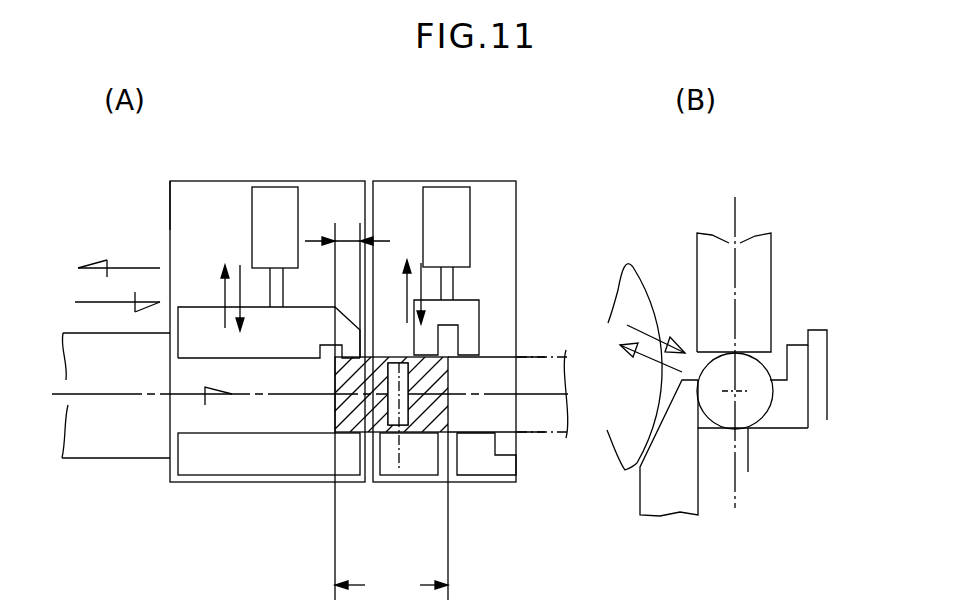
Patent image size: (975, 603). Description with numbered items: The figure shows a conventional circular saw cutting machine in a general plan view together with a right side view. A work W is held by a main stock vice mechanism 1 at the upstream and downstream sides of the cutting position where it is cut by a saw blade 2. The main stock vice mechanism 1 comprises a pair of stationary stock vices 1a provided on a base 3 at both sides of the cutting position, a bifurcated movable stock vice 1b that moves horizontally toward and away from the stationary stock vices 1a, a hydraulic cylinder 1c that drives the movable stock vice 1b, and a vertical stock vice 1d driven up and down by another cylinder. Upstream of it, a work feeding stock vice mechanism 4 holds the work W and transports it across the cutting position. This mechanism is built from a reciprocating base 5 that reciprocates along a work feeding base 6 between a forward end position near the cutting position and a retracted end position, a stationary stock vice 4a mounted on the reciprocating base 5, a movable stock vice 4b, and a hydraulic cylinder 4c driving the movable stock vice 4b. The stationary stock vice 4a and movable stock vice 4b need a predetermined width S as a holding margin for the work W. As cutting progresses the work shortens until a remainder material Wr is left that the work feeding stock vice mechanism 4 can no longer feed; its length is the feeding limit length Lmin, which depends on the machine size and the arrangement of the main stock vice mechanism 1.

In FIG. 11A, the main stock vice mechanism 1 is at (498, 290).
In FIG. 11A, the stationary stock vices 1a is at (482, 467).
In FIG. 11B, the stationary stock vices 1a is at (680, 437).
In FIG. 11A, the bifurcated movable stock vice 1b is at (467, 333).
In FIG. 11B, the bifurcated movable stock vice 1b is at (793, 343).
In FIG. 11A, the hydraulic cylinder 1c is at (438, 212).
In FIG. 11A, the vertical stock vice 1d is at (399, 470).
In FIG. 11B, the vertical stock vice 1d is at (753, 277).
In FIG. 11B, the saw blade 2 is at (632, 290).
In FIG. 11A, the base 3 is at (488, 205).
In FIG. 11B, the base 3 is at (718, 448).
In FIG. 11A, the work feeding stock vice mechanism 4 is at (206, 172).
In FIG. 11A, the stationary stock vice 4a is at (220, 455).
In FIG. 11A, the movable stock vice 4b is at (193, 320).
In FIG. 11A, the hydraulic cylinder 4c is at (266, 213).
In FIG. 11A, the reciprocating base 5 is at (187, 200).
In FIG. 11A, the work feeding base 6 is at (135, 430).
In FIG. 11A, the predetermined width S is at (343, 240).
In FIG. 11A, the work W is at (540, 443).
In FIG. 11A, the remainder material Wr is at (345, 413).
In FIG. 11B, the remainder material Wr is at (755, 412).
In FIG. 11A, the feeding limit length Lmin is at (391, 412).